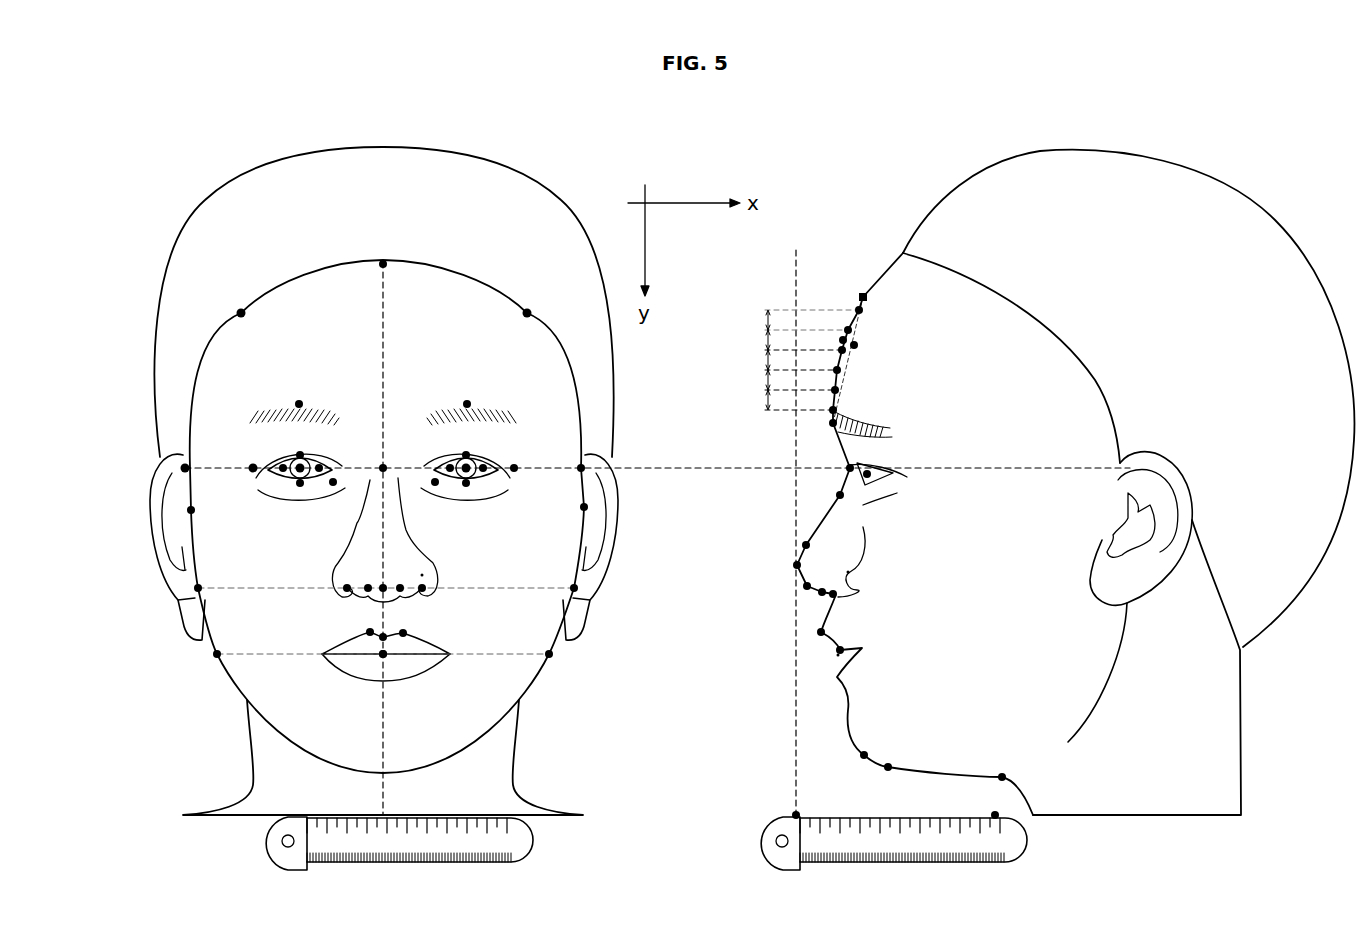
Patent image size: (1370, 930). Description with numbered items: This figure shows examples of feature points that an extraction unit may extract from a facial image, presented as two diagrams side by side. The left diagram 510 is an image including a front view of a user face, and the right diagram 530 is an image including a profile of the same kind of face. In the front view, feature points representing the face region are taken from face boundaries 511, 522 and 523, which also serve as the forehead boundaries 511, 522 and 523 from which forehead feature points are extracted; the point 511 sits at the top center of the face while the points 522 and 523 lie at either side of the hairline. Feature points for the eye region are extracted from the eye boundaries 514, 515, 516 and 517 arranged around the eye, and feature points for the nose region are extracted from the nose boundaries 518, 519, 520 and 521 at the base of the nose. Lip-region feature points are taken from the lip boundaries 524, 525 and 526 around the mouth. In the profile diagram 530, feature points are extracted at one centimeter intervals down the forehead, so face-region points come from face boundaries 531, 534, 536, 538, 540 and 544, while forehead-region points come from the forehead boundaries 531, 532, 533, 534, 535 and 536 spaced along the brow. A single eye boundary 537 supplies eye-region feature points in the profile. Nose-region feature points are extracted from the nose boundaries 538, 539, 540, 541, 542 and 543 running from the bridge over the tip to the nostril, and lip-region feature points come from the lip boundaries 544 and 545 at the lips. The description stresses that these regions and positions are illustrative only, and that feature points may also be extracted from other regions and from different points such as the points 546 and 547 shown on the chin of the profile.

The diagram of front view of user face 510 is at (406, 108).
The face boundary 511 is at (385, 258).
The eye boundary 514 is at (253, 468).
The eye boundary 515 is at (300, 455).
The eye boundary 516 is at (333, 482).
The eye boundary 517 is at (300, 483).
The nose boundary 518 is at (347, 588).
The nose boundary 519 is at (368, 588).
The nose boundary 520 is at (422, 568).
The nose boundary 521 is at (422, 588).
The face boundary 522 is at (241, 313).
The face boundary 523 is at (527, 313).
The lip boundary 524 is at (370, 632).
The lip boundary 525 is at (403, 633).
The lip boundary 526 is at (385, 660).
The diagram of profile of user face 530 is at (1108, 108).
The face boundary 531 is at (859, 310).
The forehead boundary 532 is at (848, 330).
The forehead boundary 533 is at (842, 350).
The face boundary 534 is at (837, 370).
The forehead boundary 535 is at (835, 390).
The face boundary 536 is at (838, 430).
The eye boundary 537 is at (850, 468).
The face boundary 538 is at (840, 495).
The nose boundary 539 is at (806, 545).
The face boundary 540 is at (797, 565).
The nose boundary 541 is at (807, 586).
The nose boundary 542 is at (848, 572).
The nose boundary 543 is at (833, 594).
The face boundary 544 is at (821, 632).
The lip boundary 545 is at (838, 655).
The different point 546 is at (864, 755).
The different point 547 is at (888, 767).